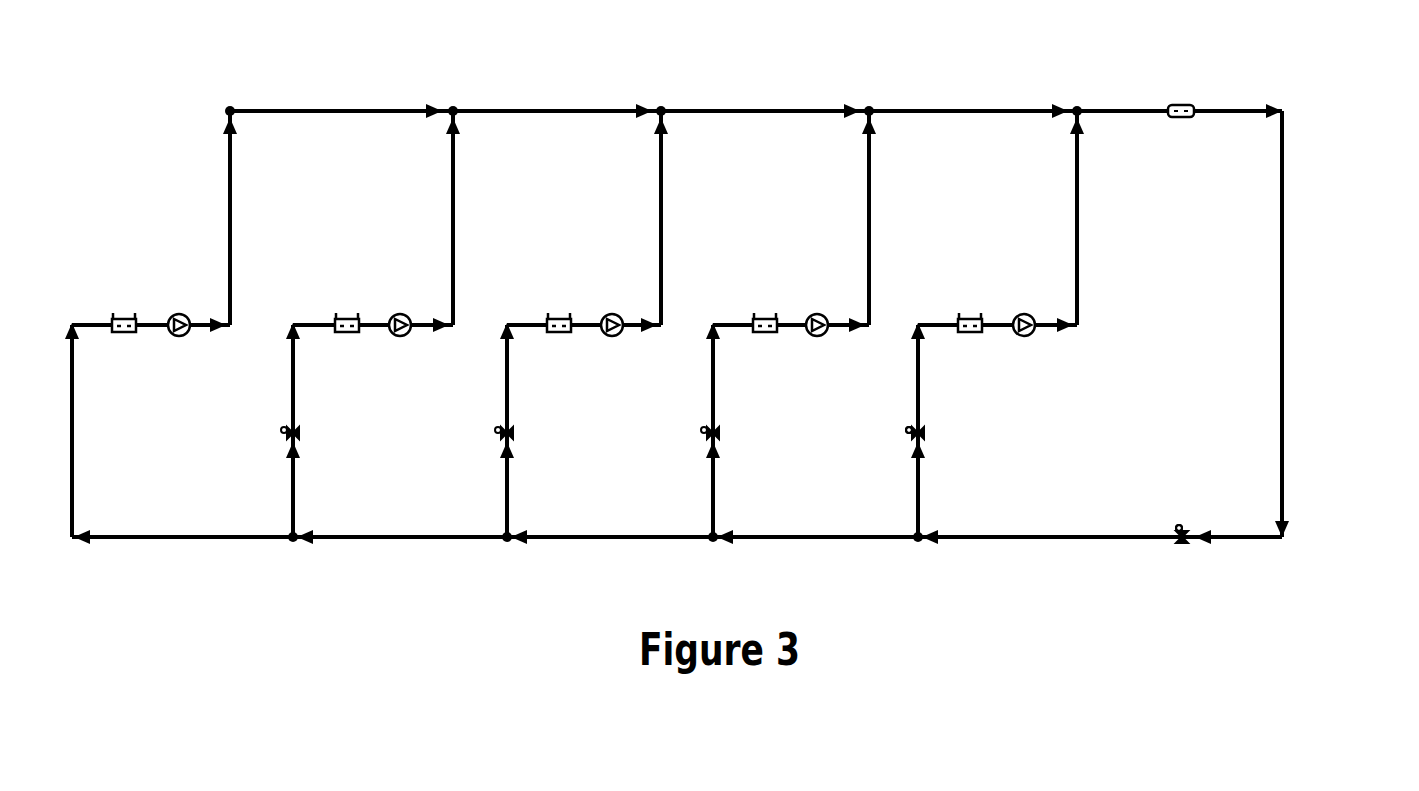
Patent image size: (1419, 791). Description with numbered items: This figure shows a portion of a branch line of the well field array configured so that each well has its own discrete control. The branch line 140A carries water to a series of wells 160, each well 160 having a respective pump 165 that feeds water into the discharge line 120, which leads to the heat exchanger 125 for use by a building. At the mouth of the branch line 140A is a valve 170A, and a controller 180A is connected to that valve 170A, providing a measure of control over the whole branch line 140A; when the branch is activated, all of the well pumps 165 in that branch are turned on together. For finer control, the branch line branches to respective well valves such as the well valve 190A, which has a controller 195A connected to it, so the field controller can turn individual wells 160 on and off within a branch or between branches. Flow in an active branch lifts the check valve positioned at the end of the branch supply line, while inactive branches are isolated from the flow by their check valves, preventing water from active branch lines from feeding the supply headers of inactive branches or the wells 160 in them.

The discharge line 120 is at (940, 104).
The heat exchanger 125 is at (1189, 101).
The branch line 140A is at (1292, 343).
The well 160 is at (965, 306).
The pump 165 is at (1037, 310).
The valve 170A is at (1168, 547).
The controller 180A is at (1190, 519).
The well valve 190A is at (928, 420).
The controller 195A is at (906, 438).